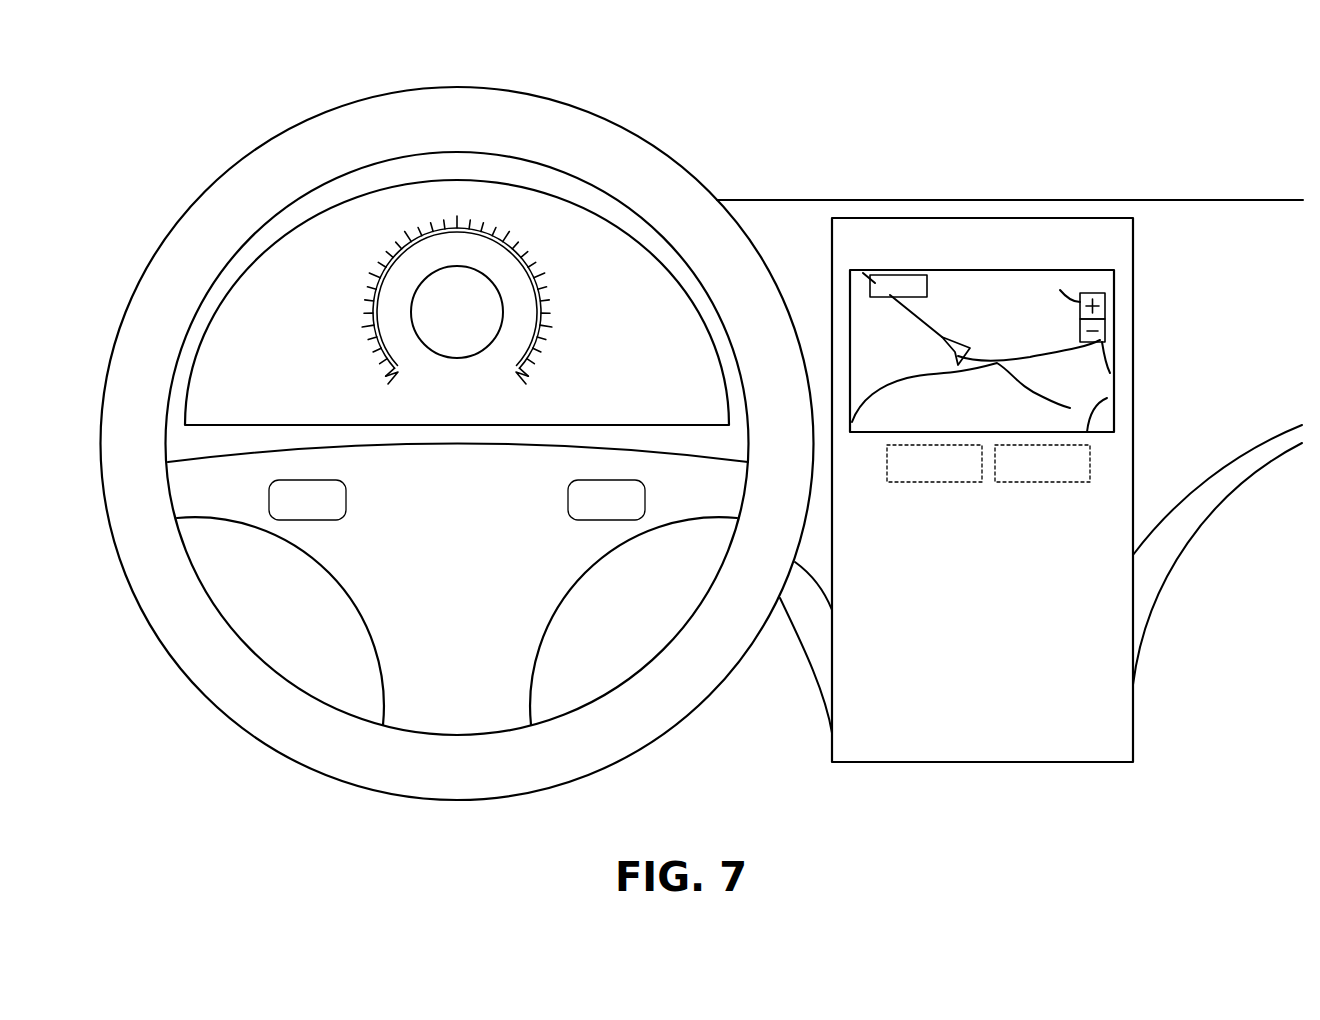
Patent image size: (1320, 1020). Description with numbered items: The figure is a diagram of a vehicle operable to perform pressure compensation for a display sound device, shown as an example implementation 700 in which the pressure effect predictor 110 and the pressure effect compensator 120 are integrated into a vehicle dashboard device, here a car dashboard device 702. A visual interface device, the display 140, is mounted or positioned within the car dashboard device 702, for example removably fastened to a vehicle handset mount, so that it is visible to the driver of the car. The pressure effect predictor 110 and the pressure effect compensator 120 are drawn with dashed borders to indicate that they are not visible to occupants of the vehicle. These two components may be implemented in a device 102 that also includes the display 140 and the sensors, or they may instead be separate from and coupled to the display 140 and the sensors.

The implementation 700 is at (1122, 97).
The car dashboard device 702 is at (1148, 200).
The device 102 is at (1041, 490).
The display 140 is at (1113, 332).
The pressure effect predictor 110 is at (934, 463).
The pressure effect compensator 120 is at (1042, 463).